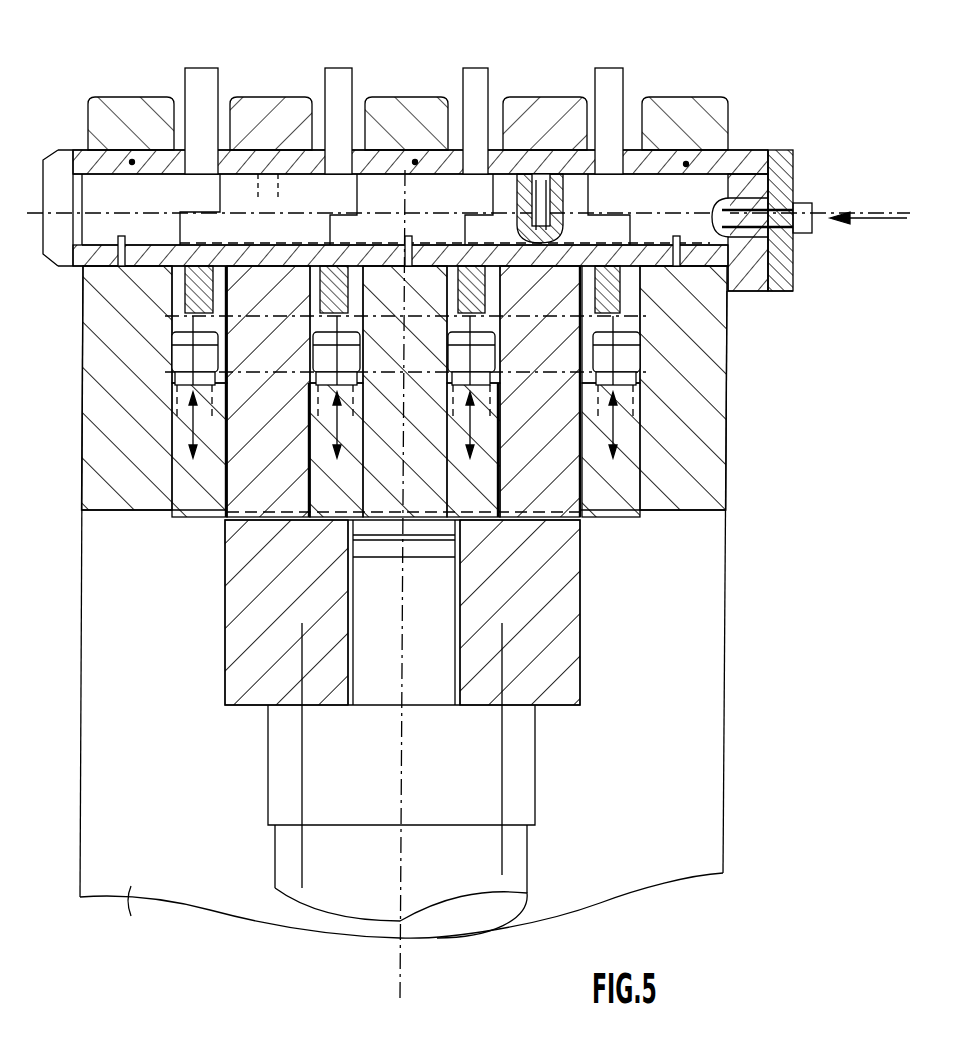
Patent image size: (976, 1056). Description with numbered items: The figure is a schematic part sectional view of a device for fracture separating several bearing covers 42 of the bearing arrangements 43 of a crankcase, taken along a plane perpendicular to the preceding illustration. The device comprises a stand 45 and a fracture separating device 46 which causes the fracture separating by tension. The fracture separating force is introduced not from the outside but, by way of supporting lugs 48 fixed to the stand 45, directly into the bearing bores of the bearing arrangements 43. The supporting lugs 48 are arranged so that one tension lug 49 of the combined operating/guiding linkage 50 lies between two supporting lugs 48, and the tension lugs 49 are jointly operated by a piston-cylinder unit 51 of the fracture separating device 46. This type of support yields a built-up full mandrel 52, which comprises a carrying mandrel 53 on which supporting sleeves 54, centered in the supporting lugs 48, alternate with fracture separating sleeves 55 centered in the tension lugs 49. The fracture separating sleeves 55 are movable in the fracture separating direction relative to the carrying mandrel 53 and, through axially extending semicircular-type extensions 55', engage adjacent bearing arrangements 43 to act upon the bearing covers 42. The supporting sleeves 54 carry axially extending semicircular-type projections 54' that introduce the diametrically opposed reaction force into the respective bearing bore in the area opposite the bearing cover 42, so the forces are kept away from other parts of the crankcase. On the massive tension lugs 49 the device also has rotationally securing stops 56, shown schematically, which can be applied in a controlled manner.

The bearing covers 42 is at (192, 288).
The bearing arrangements 43 is at (203, 80).
The stand 45 is at (403, 606).
The fracture separating device 46 is at (198, 668).
The supporting lugs 48 is at (116, 110).
The tension lugs 49 is at (268, 112).
The combined operating/guiding linkage 50 is at (592, 548).
The piston-cylinder unit 51 is at (364, 867).
The built-up full mandrel 52 is at (63, 268).
The carrying mandrel 53 is at (92, 224).
The supporting sleeves 54 is at (426, 116).
The fracture separating sleeves 55 is at (435, 154).
The semicircular-type projections 54' is at (429, 187).
The semicircular-type extensions 55' is at (395, 230).
The rotationally securing stops 56 is at (176, 356).